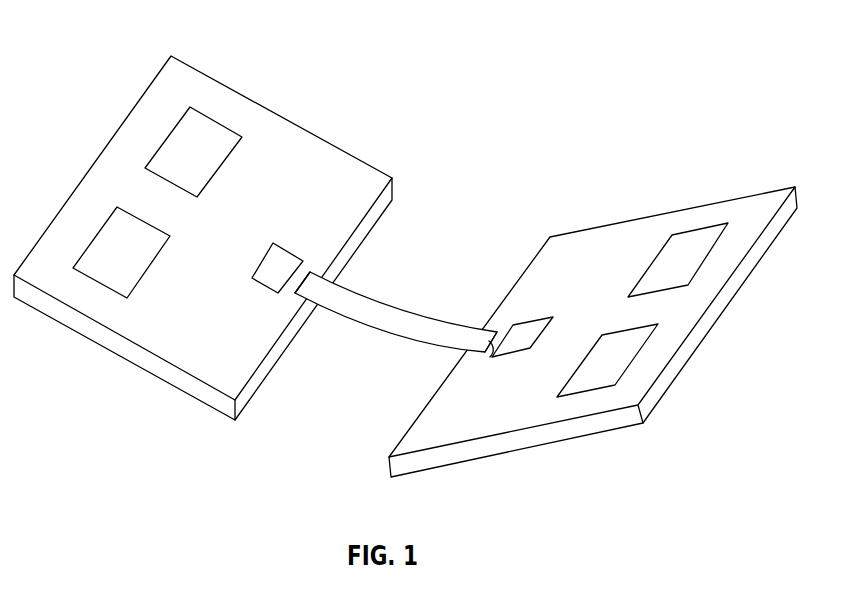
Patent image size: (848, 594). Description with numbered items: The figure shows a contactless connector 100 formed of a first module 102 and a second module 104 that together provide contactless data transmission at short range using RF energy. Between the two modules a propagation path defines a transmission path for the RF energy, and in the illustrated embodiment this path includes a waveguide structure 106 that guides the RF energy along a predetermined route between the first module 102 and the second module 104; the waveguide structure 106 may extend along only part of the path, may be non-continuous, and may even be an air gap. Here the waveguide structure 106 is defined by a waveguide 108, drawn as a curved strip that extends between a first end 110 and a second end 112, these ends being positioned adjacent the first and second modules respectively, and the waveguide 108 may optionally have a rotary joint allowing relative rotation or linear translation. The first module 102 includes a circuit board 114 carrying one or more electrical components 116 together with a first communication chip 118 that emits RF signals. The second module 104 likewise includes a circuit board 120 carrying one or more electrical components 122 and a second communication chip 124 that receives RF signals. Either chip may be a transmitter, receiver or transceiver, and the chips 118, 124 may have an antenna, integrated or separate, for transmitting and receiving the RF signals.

The contactless connector 100 is at (500, 112).
The first module 102 is at (321, 99).
The second module 104 is at (669, 195).
The waveguide structure 106 is at (398, 293).
The waveguide 108 is at (383, 322).
The first end 110 is at (297, 283).
The second end 112 is at (491, 352).
The circuit board 114 is at (345, 175).
The electrical components 116 is at (205, 155).
The first communication chip 118 is at (270, 268).
The circuit board 120 is at (738, 228).
The electrical components 122 is at (623, 350).
The second communication chip 124 is at (533, 327).